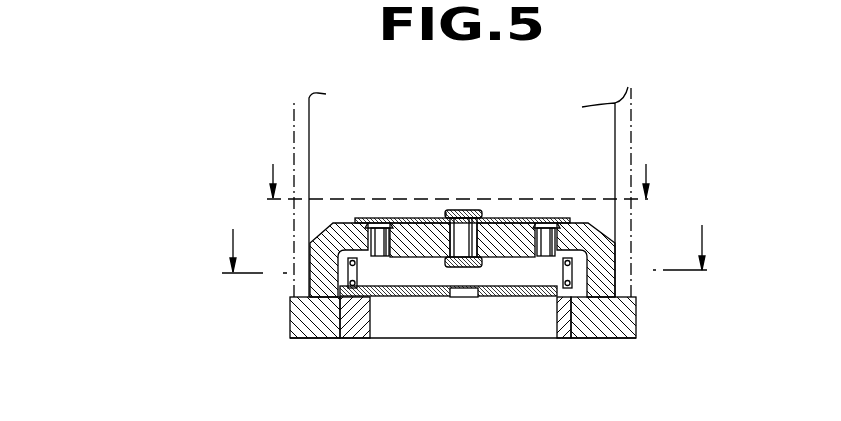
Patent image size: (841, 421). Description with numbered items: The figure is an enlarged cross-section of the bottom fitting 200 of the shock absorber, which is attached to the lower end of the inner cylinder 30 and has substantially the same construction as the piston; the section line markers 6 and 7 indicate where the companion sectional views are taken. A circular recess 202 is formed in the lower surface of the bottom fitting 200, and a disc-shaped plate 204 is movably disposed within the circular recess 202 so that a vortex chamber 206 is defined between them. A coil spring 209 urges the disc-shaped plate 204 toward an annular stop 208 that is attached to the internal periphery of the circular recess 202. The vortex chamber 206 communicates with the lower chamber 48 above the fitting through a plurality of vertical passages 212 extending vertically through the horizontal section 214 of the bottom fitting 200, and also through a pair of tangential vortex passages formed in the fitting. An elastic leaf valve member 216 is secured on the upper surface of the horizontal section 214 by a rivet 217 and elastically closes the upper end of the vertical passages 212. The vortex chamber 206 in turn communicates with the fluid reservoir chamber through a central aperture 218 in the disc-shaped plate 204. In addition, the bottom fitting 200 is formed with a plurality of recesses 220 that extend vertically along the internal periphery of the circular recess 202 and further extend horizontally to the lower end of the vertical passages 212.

The lower chamber 48 is at (537, 128).
The inner cylinder 30 is at (628, 130).
The section line 6- 6 is at (460, 169).
The section line 7- 7 is at (465, 237).
The bottom fitting 200 is at (605, 225).
The circular recess 202 is at (412, 265).
The disc-shaped plate 204 is at (510, 297).
The vortex chamber 206 is at (380, 297).
The annular stop 208 is at (571, 338).
The coil spring 209 is at (352, 265).
The vertical passages 212 is at (372, 218).
The horizontal section 214 is at (499, 233).
The elastic leaf valve member 216 is at (437, 209).
The rivet 217 is at (463, 210).
The central aperture 218 is at (460, 290).
The recesses 220 is at (575, 280).